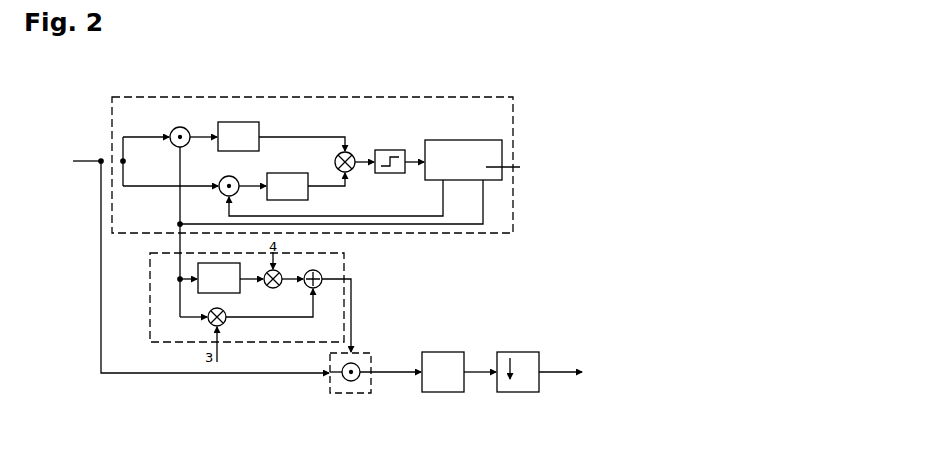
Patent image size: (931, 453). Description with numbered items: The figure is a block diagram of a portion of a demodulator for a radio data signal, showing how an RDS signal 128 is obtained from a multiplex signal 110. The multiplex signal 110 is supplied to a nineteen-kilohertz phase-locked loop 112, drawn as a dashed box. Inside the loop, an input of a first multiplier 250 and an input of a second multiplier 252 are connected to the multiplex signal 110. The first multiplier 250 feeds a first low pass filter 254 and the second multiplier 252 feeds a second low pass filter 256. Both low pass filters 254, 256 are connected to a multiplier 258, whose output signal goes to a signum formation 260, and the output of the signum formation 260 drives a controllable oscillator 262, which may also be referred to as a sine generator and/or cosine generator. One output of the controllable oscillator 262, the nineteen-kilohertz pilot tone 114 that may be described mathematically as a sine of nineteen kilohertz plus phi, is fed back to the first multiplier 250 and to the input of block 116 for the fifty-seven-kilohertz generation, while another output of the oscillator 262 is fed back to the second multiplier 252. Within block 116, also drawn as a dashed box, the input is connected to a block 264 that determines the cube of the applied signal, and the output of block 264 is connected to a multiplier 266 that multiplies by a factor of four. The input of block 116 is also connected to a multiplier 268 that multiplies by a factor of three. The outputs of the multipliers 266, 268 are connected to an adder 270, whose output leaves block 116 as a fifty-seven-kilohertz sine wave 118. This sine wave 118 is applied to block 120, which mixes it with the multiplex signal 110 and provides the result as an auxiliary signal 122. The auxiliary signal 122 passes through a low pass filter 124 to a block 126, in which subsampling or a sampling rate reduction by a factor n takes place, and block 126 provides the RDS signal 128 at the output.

The multiplex signal 110 is at (77, 158).
The 19-kHz phase-locked loop 112 is at (513, 108).
The 19-kHz pilot tone 114 is at (483, 203).
The block of the 57-kHz generation 116 is at (344, 258).
The 57-kHz sine wave 118 is at (351, 290).
The block for mixing 120 is at (360, 350).
The auxiliary signal 122 is at (392, 374).
The low pass filter 124 is at (445, 392).
The block for subsampling 126 is at (517, 352).
The RDS signal 128 is at (553, 374).
The first multiplier 250 is at (180, 127).
The second multiplier 252 is at (238, 178).
The first low pass filter 254 is at (222, 122).
The second low pass filter 256 is at (300, 173).
The multiplier 258 is at (350, 153).
The signum formation 260 is at (390, 150).
The controllable oscillator 262 is at (461, 140).
The block determining the cube 264 is at (198, 270).
The multiplier by a factor of four 266 is at (264, 290).
The multiplier by a factor of three 268 is at (208, 324).
The adder 270 is at (288, 302).